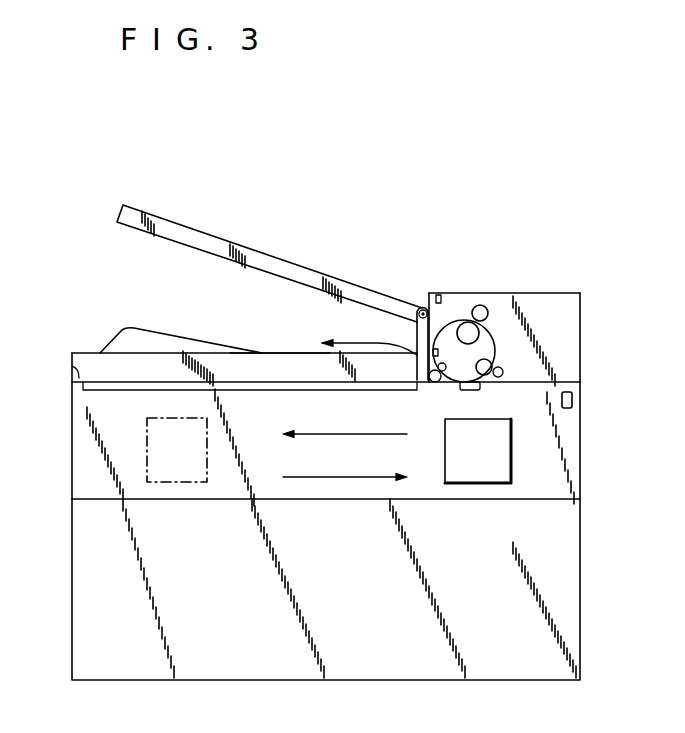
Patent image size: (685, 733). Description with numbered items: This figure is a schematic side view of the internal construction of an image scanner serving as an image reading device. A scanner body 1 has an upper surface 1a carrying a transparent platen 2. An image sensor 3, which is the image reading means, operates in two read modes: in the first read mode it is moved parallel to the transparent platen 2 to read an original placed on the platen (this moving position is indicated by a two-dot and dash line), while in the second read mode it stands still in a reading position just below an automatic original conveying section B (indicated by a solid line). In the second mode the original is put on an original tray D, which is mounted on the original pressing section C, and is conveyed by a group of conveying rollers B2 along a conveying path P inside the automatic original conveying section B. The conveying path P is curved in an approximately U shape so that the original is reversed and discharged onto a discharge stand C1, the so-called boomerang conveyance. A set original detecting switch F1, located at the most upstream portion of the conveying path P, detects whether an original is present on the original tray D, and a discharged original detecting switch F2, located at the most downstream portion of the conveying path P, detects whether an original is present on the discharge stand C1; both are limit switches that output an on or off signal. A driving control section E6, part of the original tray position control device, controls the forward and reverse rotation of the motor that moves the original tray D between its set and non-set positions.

The scanner body 1 is at (582, 453).
The upper surface 1a is at (78, 377).
The transparent platen 2 is at (120, 388).
The image sensor 3 is at (148, 468).
The original tray D is at (170, 222).
The original pressing section C is at (132, 348).
The discharge stand C1 is at (272, 353).
The automatic original conveying section B is at (543, 291).
The group of conveying rollers B2 is at (487, 296).
The conveying path P is at (458, 306).
The set original detecting switch F1 is at (439, 295).
The discharged original detecting switch F2 is at (438, 354).
The driving control section E6 is at (573, 398).